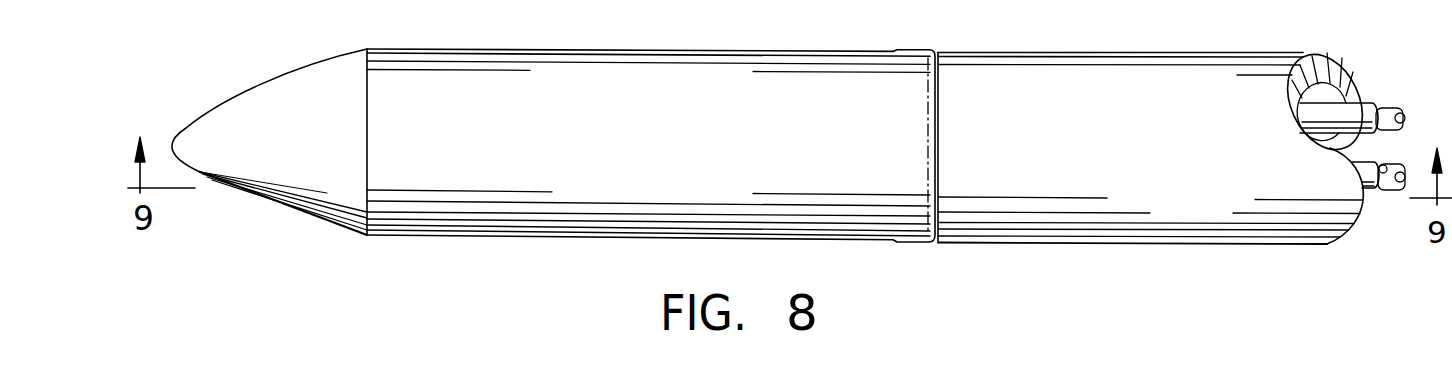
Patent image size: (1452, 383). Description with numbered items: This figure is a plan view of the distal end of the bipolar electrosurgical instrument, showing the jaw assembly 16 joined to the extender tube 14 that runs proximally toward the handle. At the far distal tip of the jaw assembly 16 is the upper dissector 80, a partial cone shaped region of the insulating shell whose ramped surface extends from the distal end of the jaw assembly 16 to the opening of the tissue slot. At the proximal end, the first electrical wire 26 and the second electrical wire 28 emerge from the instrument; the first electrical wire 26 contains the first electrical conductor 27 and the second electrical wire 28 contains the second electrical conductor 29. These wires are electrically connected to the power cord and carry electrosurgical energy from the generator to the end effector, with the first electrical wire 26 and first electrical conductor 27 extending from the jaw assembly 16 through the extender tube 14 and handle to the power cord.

The upper dissector 80 is at (297, 90).
The jaw assembly 16 is at (538, 141).
The extender tube 14 is at (1153, 124).
The second electrical wire 28 is at (1310, 110).
The second electrical conductor 29 is at (1393, 115).
The first electrical wire 26 is at (1345, 173).
The first electrical conductor 27 is at (1400, 192).